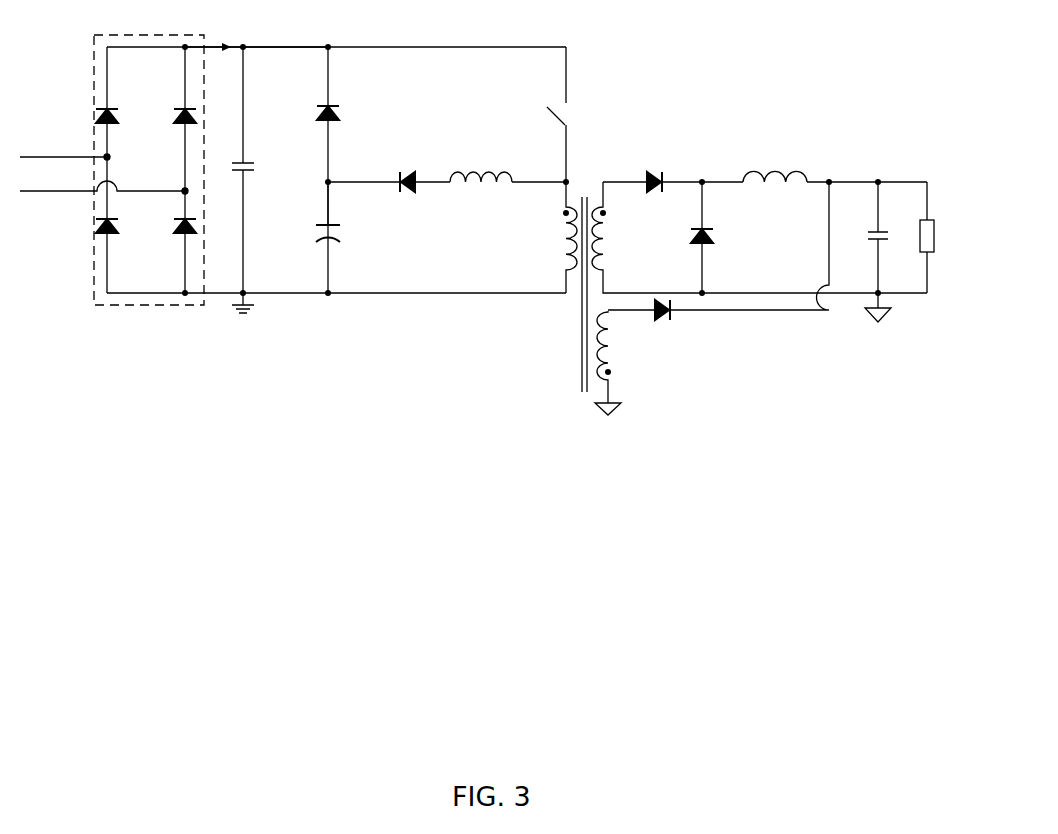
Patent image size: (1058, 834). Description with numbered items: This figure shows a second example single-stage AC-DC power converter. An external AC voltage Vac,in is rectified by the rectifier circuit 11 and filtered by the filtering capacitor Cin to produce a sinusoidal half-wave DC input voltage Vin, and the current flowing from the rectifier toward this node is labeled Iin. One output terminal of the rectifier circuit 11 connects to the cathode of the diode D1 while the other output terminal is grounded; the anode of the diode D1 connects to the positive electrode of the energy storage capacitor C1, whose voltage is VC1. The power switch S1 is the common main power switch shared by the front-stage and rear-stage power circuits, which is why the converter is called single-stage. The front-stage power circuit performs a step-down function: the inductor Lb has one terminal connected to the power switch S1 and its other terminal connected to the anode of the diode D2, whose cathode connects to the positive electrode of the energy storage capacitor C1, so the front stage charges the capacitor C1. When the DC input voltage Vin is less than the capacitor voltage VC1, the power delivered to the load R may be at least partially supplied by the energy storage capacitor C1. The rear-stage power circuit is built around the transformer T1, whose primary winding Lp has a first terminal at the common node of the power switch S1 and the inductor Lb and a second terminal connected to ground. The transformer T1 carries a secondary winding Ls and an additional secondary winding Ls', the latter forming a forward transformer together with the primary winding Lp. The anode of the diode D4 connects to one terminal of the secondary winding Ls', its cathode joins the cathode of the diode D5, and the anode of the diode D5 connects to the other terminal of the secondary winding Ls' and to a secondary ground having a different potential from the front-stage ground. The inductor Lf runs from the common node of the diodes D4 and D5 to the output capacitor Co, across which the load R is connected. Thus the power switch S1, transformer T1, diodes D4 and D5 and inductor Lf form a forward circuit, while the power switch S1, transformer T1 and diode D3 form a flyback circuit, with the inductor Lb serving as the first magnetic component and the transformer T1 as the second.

The rectifier circuit 11 is at (203, 88).
The external AC voltage Vac,in is at (102, 174).
The input current Iin is at (214, 35).
The DC input voltage Vin is at (285, 61).
The filtering capacitor Cin is at (260, 170).
The diode D1 is at (343, 117).
The energy storage capacitor C1 is at (345, 234).
The voltage on energy storage capacitor VC1 is at (310, 203).
The diode D2 is at (412, 199).
The inductor Lb is at (481, 162).
The power switch S1 is at (574, 114).
The transformer T1 is at (588, 275).
The primary winding Lp is at (555, 237).
The second secondary winding Ls' is at (647, 237).
The secondary winding Ls is at (616, 363).
The diode D4 is at (660, 164).
The inductor Lf is at (775, 161).
The diode D5 is at (719, 237).
The diode D3 is at (718, 268).
The output capacitor Co is at (863, 252).
The load R is at (916, 237).